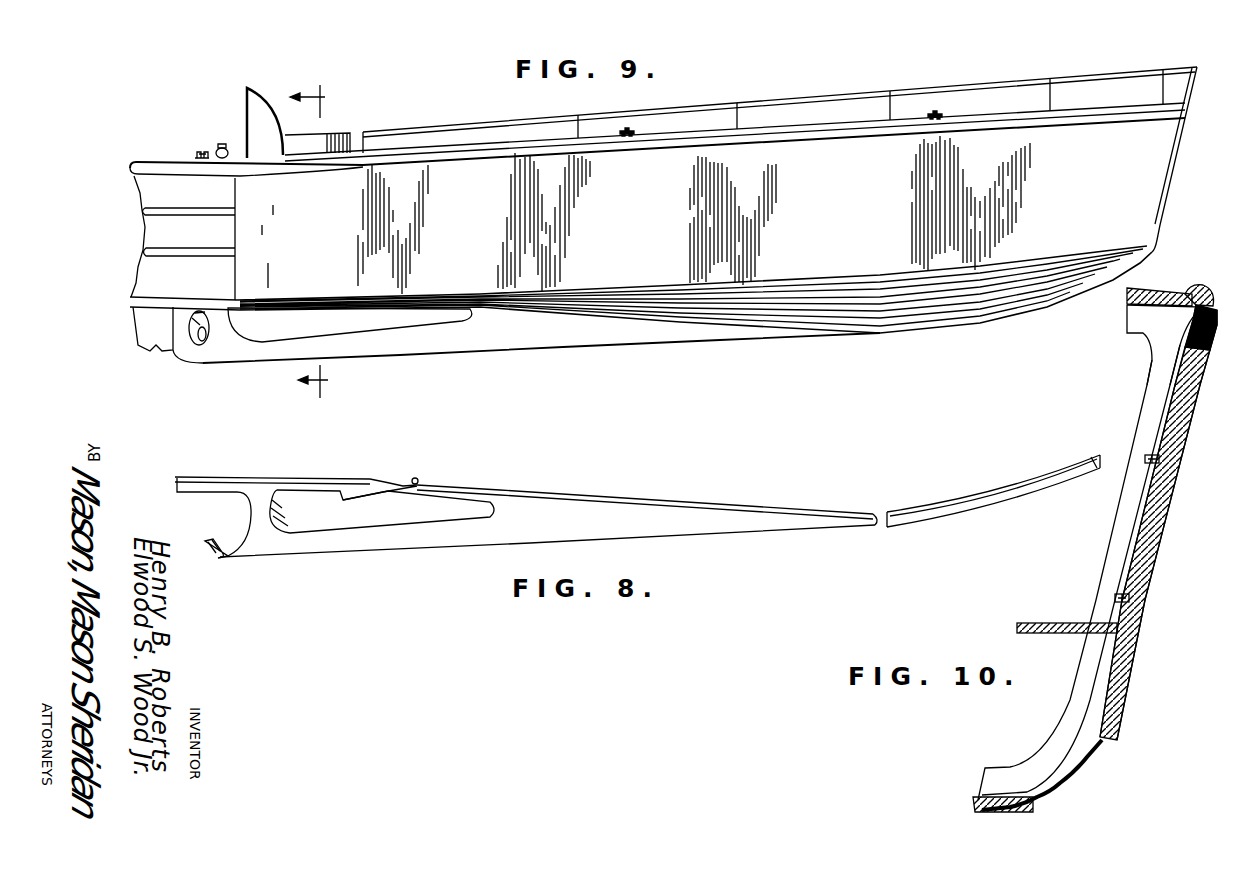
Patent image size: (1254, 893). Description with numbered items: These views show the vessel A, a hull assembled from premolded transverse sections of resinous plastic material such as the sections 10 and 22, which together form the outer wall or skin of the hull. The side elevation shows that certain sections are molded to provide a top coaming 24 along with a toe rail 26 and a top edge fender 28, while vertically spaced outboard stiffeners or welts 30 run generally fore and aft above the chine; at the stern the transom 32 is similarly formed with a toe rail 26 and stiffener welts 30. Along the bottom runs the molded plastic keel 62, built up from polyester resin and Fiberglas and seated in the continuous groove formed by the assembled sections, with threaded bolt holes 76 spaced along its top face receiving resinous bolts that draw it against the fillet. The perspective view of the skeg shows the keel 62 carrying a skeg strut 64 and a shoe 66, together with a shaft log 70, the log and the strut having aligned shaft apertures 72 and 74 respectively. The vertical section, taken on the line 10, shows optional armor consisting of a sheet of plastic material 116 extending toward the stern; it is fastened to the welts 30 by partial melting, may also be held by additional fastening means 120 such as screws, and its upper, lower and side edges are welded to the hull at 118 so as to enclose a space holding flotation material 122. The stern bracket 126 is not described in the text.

In FIG. 9, the premolded transverse section 10 is at (309, 239).
In FIG. 10, the premolded transverse section 22 is at (1100, 560).
In FIG. 9, the top coaming 24 is at (1005, 82).
In FIG. 9, the toe rail 26 is at (833, 128).
In FIG. 10, the top edge fender 28 is at (1217, 317).
In FIG. 9, the outboard stiffener welt 30 is at (143, 215).
In FIG. 10, the outboard stiffener welt 30 is at (1093, 737).
In FIG. 10, the transom 32 is at (1196, 290).
In FIG. 9, the keel 62 is at (568, 337).
In FIG. 8, the keel 62 is at (648, 530).
In FIG. 9, the skeg strut 64 is at (227, 333).
In FIG. 8, the skeg strut 64 is at (250, 512).
In FIG. 9, the shoe 66 is at (175, 362).
In FIG. 8, the shoe 66 is at (215, 555).
In FIG. 8, the shaft log 70 is at (397, 480).
In FIG. 8, the shaft aperture 72 is at (420, 478).
In FIG. 8, the shaft aperture 74 is at (277, 513).
In FIG. 8, the threaded bolt hole 76 is at (582, 493).
In FIG. 9, the sheet of plastic material 116 is at (735, 163).
In FIG. 10, the sheet of plastic material 116 is at (1196, 398).
In FIG. 9, the weld 118 is at (470, 158).
In FIG. 10, the weld 118 is at (1205, 335).
In FIG. 10, the additional fastening means 120 is at (1178, 450).
In FIG. 10, the flotation material 122 is at (1168, 523).
In FIG. 9, the transom bracket 126 is at (152, 350).
In FIG. 9, the vessel A is at (1138, 52).